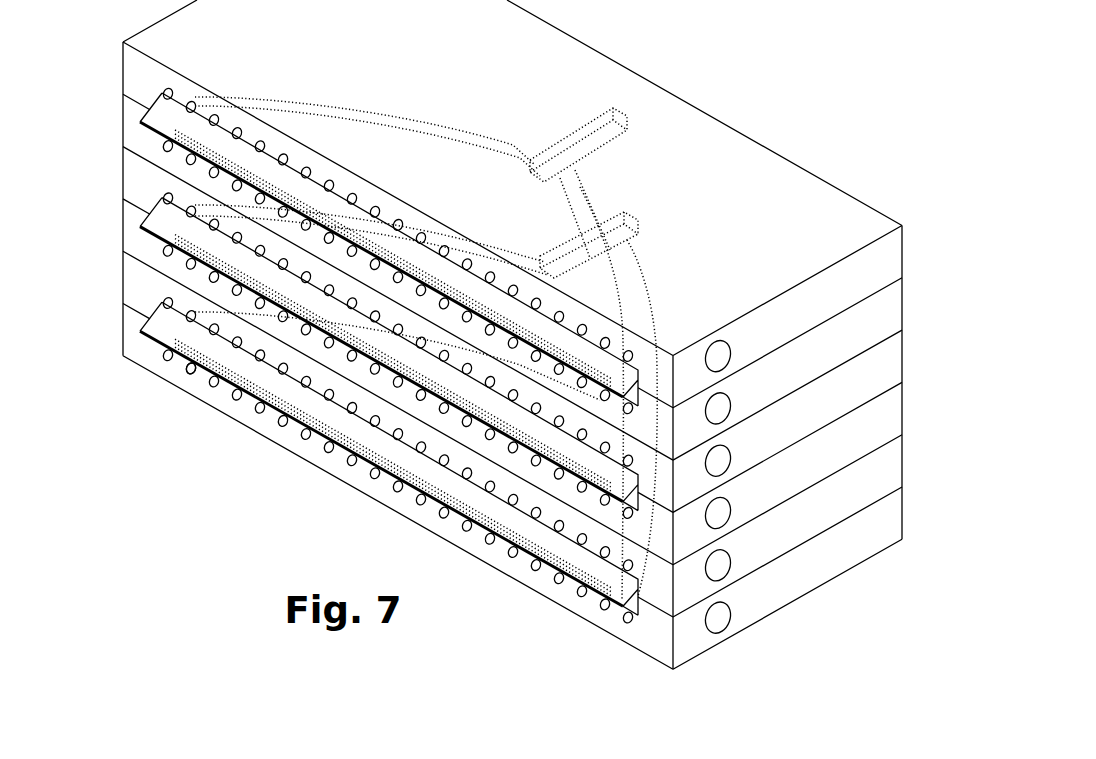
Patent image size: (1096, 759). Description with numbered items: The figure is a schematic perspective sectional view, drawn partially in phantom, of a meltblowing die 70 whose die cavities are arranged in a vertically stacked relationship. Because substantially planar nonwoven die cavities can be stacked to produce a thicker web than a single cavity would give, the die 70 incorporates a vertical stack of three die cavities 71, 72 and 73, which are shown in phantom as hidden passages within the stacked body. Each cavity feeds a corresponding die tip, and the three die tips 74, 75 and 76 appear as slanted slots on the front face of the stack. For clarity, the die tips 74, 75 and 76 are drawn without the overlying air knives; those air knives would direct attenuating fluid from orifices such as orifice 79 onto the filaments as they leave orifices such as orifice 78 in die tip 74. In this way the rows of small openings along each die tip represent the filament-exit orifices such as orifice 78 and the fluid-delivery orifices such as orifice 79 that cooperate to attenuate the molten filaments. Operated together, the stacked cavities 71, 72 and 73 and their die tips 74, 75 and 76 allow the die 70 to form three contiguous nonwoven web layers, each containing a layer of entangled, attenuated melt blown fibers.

The meltblowing die 70 is at (730, 78).
The die cavity 71 is at (630, 148).
The die cavity 72 is at (637, 232).
The die cavity 73 is at (653, 573).
The die tip 74 is at (143, 113).
The die tip 75 is at (143, 226).
The die tip 76 is at (596, 597).
The orifice 78 is at (166, 141).
The orifice 79 is at (194, 374).